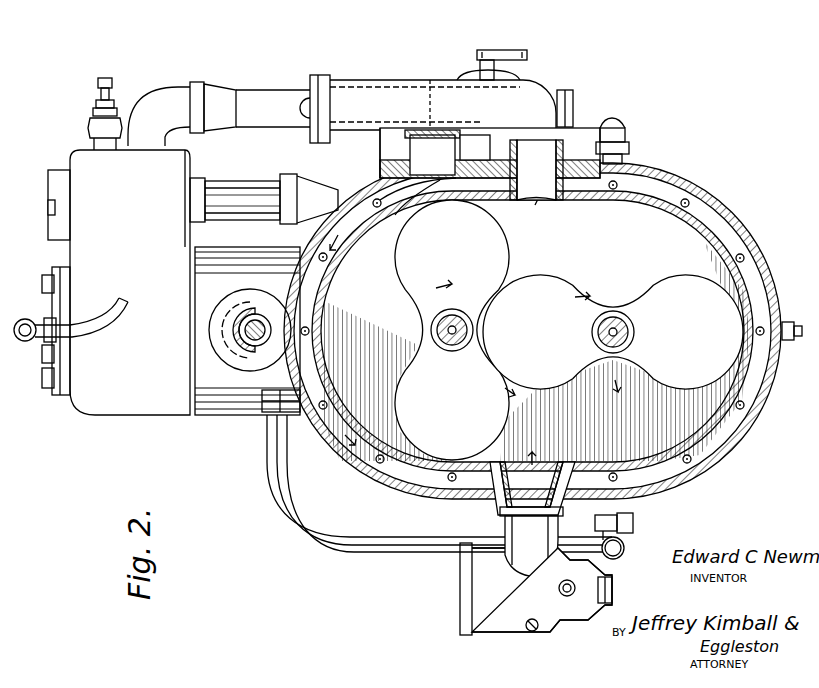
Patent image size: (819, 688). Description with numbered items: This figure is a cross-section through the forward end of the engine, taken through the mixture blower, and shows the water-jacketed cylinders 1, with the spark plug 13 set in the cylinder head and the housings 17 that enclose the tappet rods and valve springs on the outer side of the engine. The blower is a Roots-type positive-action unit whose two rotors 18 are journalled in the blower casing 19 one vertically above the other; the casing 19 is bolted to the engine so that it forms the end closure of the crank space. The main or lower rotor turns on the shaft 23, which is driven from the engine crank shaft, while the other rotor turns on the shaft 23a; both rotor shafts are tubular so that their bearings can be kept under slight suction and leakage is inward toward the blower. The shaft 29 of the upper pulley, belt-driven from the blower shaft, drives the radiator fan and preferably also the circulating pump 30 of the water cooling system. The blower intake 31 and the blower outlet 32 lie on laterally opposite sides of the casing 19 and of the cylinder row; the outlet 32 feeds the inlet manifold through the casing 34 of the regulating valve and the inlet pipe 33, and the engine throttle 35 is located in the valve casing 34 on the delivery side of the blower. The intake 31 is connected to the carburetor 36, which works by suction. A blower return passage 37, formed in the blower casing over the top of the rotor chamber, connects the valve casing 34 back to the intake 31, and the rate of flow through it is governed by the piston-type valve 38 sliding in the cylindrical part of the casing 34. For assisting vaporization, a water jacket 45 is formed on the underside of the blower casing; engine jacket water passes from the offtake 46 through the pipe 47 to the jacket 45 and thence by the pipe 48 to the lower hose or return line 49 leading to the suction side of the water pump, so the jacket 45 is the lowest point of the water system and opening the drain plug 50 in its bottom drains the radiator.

The cylinders 1 is at (213, 402).
The spark plug 13 is at (96, 128).
The housings 17 is at (236, 192).
The rotors 18 is at (490, 246).
The blower casing 19 is at (374, 250).
The shaft of the main rotor 23 is at (615, 353).
The rotor shaft 23a is at (430, 320).
The shaft 29 is at (253, 326).
The circulating pump 30 is at (240, 366).
The blower intake 31 is at (545, 500).
The blower outlet 32 is at (536, 145).
The inlet pipe 33 is at (283, 103).
The casing of the regulating valve 34 is at (318, 78).
The engine throttle 35 is at (503, 50).
The carburetor 36 is at (500, 620).
The blower return passage 37 is at (433, 150).
The piston-type valve 38 is at (355, 75).
The water jacket 45 is at (717, 225).
The offtake 46 is at (32, 318).
The pipe 47 is at (620, 130).
The pipe 48 is at (640, 527).
The lower hose or return line 49 is at (626, 552).
The drain plug 50 is at (785, 322).